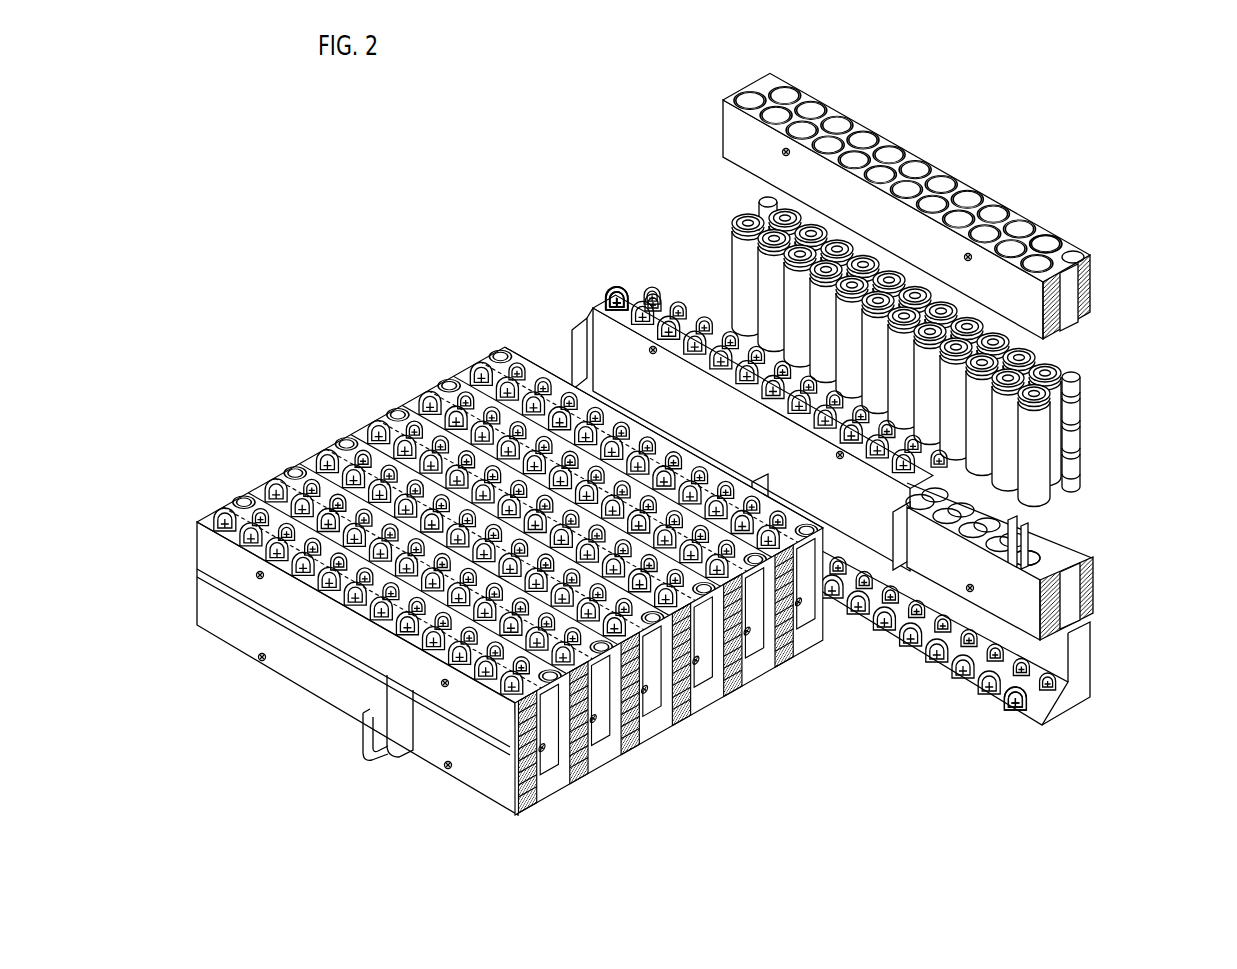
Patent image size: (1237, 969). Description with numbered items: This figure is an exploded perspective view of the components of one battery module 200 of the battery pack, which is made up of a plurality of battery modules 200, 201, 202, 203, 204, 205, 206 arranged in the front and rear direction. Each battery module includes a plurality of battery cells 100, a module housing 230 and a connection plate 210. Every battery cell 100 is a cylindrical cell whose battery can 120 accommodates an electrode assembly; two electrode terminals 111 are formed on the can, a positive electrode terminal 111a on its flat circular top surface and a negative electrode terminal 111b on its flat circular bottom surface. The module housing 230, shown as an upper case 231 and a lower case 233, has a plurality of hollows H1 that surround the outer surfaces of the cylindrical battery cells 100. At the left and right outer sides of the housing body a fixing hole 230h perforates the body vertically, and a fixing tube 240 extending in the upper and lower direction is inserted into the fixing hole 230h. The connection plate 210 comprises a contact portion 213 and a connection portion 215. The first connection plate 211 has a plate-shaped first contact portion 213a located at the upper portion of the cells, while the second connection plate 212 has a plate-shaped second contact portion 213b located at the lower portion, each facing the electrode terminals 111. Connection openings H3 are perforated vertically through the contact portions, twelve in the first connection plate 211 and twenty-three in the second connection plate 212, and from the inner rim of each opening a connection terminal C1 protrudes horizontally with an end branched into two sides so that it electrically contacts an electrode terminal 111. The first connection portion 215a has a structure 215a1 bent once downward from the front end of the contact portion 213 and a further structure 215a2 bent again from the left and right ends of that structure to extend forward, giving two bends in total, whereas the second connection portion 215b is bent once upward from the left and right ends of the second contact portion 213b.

The battery module 200 is at (957, 134).
The battery cell 100 is at (945, 528).
The electrode terminals 111 is at (945, 534).
The positive electrode terminal 111a is at (963, 516).
The negative electrode terminal 111b is at (930, 536).
The battery can 120 is at (1042, 445).
The fixing tube 240 is at (1090, 432).
The battery module 201 is at (474, 355).
The battery module 202 is at (423, 387).
The battery module 203 is at (371, 416).
The battery module 204 is at (319, 445).
The battery module 205 is at (266, 475).
The battery module 206 is at (216, 503).
The connection plate 210 is at (771, 540).
The first connection plate 211 is at (702, 310).
The second connection plate 212 is at (907, 696).
The contact portion 213 is at (876, 540).
The first contact portion 213a is at (632, 292).
The second contact portion 213b is at (968, 676).
The connection portion 215 is at (676, 544).
The first connection portion 215a is at (648, 527).
The bent and extending structure 215a1 is at (598, 338).
The bent and extending structure 215a2 is at (574, 352).
The second connection portion 215b is at (1086, 637).
The module housing 230 is at (967, 466).
The upper case 231 is at (1100, 275).
The lower case 233 is at (1100, 585).
The fixing hole 230h is at (1073, 255).
The connection terminal C1 is at (615, 293).
The hollow H1 is at (1050, 245).
The connection opening H3 is at (610, 295).